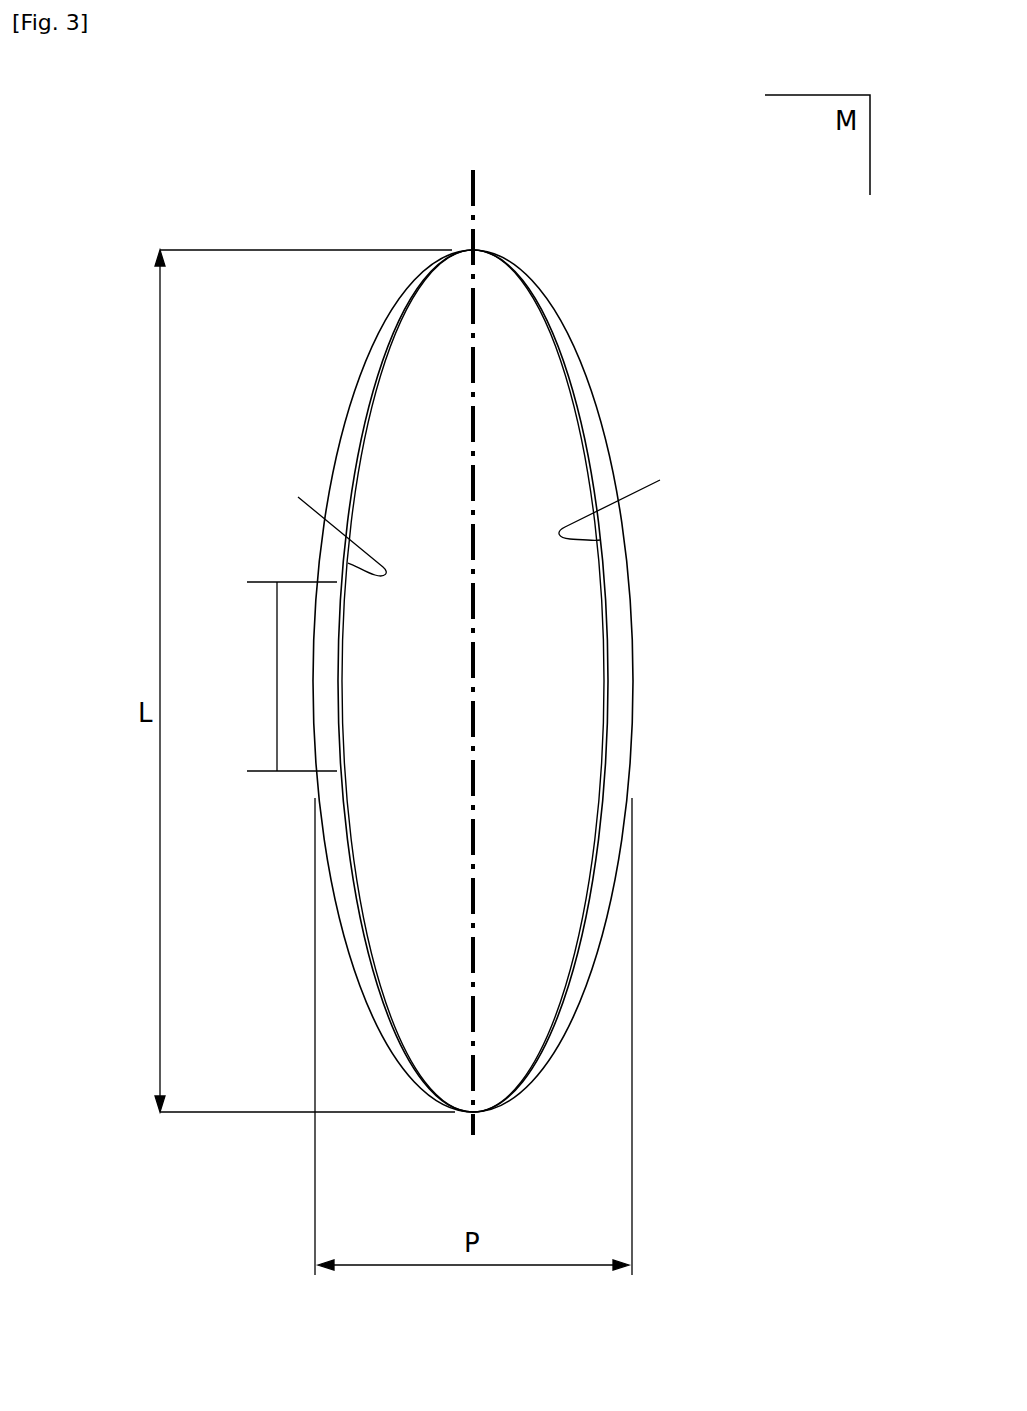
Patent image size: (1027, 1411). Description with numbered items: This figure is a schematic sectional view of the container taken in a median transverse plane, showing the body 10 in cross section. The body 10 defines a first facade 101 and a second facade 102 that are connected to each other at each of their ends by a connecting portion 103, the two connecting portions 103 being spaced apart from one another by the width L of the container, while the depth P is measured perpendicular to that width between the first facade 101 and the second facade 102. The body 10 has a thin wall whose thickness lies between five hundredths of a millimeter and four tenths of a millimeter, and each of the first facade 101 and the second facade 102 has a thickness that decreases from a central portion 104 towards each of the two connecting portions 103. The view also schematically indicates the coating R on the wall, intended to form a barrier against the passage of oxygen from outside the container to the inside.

The body 10 is at (503, 668).
The first facade 101 is at (347, 450).
The second facade 102 is at (623, 705).
The connecting portion 103 is at (478, 250).
The central portion 104 is at (277, 678).